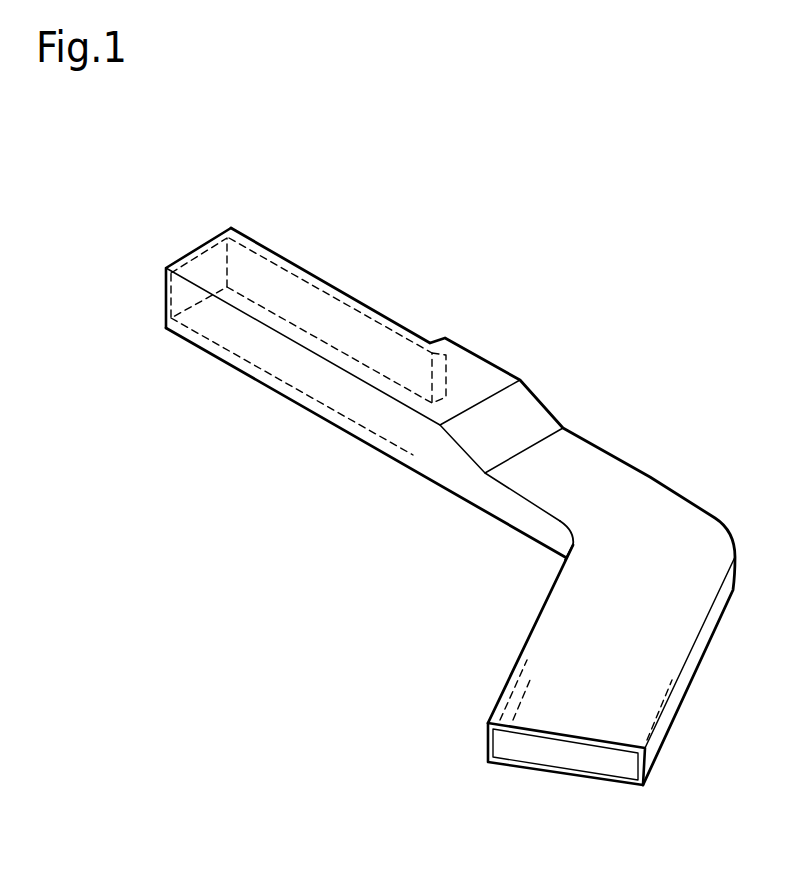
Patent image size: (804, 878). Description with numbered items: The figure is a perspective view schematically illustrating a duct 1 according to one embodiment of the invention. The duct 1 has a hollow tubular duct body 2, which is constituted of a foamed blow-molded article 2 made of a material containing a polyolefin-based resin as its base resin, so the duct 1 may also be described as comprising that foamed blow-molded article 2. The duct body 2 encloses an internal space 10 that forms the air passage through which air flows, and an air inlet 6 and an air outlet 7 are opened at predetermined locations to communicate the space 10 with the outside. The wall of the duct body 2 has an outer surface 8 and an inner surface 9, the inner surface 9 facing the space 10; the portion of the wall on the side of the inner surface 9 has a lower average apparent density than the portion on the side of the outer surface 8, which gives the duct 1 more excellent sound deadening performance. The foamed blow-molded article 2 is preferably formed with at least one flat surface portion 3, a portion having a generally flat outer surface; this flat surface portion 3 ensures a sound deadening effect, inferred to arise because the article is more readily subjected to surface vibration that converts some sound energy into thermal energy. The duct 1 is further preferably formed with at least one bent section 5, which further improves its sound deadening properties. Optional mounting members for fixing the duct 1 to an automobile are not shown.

The duct 1 is at (561, 291).
The duct body 2 is at (650, 477).
The flat surface portion 3 is at (580, 458).
The bent section 5 is at (561, 550).
The air inlet 6 is at (618, 767).
The air outlet 7 is at (207, 262).
The outer surface 8 is at (582, 730).
The inner surface 9 is at (518, 750).
The internal space 10 is at (220, 322).